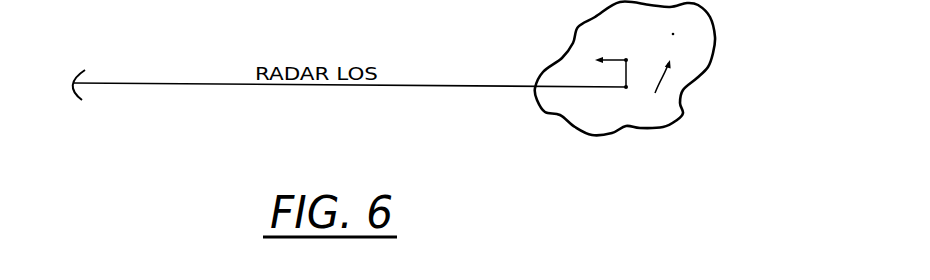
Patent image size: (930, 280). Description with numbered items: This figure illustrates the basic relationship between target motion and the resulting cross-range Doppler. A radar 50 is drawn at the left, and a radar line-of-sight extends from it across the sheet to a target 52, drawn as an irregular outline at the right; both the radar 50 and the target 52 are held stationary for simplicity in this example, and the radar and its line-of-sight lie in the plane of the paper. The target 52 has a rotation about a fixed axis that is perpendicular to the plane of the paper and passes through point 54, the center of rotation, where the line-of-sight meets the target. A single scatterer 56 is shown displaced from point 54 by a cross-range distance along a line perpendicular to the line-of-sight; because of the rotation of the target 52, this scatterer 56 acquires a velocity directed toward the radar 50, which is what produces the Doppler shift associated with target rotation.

The radar 50 is at (74, 80).
The target 52 is at (657, 116).
The point 54 is at (626, 90).
The single scatterer 56 is at (627, 59).